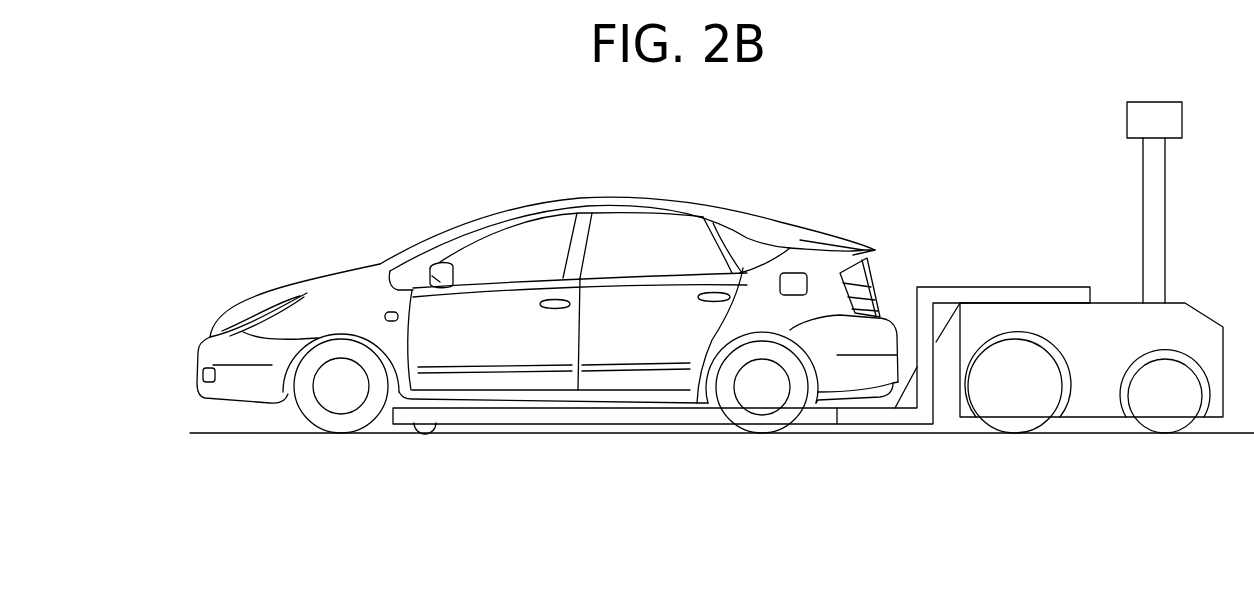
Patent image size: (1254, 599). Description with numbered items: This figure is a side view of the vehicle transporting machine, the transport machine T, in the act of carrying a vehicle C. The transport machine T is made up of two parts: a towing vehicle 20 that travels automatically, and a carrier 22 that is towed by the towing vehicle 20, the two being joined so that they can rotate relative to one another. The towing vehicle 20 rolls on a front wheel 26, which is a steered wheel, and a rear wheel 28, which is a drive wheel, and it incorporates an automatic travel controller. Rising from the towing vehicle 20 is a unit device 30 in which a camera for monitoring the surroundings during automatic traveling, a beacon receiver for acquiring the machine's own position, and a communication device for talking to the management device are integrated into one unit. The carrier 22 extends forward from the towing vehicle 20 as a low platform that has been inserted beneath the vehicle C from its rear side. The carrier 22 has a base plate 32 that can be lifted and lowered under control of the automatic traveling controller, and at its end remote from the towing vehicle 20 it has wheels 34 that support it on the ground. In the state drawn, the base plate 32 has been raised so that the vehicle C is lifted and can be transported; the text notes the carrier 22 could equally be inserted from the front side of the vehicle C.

The towing vehicle 20 is at (1097, 438).
The carrier 22 is at (878, 440).
The front wheel 26 is at (1177, 417).
The rear wheel 28 is at (1013, 422).
The unit device 30 is at (1170, 108).
The base plate 32 is at (510, 407).
The wheels 34 is at (428, 430).
The vehicle C is at (520, 207).
The transport machine T is at (998, 112).